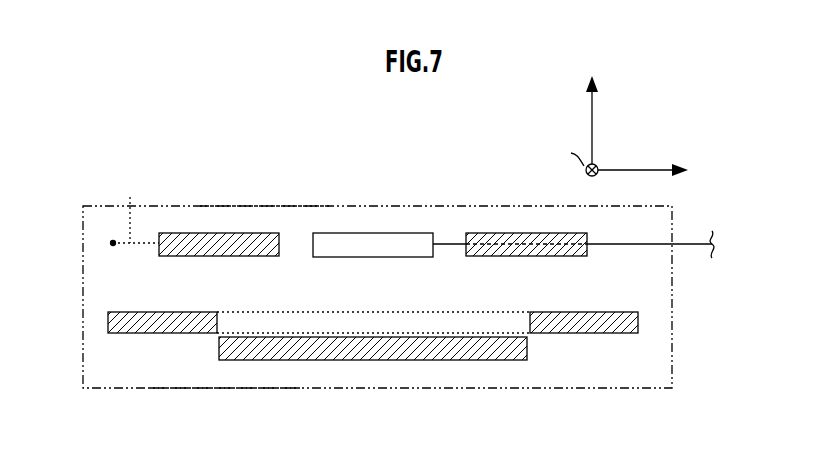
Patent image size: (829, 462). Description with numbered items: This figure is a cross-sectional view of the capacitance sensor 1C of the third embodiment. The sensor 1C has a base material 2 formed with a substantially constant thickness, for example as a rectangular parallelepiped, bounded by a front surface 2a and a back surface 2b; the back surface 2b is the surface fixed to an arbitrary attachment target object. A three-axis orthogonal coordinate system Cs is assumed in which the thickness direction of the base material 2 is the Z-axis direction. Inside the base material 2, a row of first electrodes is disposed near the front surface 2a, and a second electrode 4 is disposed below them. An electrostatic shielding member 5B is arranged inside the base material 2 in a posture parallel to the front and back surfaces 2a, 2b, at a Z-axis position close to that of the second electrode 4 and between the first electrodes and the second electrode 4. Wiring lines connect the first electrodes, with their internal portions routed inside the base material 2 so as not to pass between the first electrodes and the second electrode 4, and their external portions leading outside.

The capacitance sensor 1C is at (181, 145).
The base material 2 is at (334, 200).
The front surface of the base material 2a is at (247, 205).
The back surface of the base material 2b is at (216, 389).
The second electrode 4 is at (385, 360).
The shield electrode 5B is at (143, 333).
The three-axis orthogonal coordinate system Cs is at (626, 119).